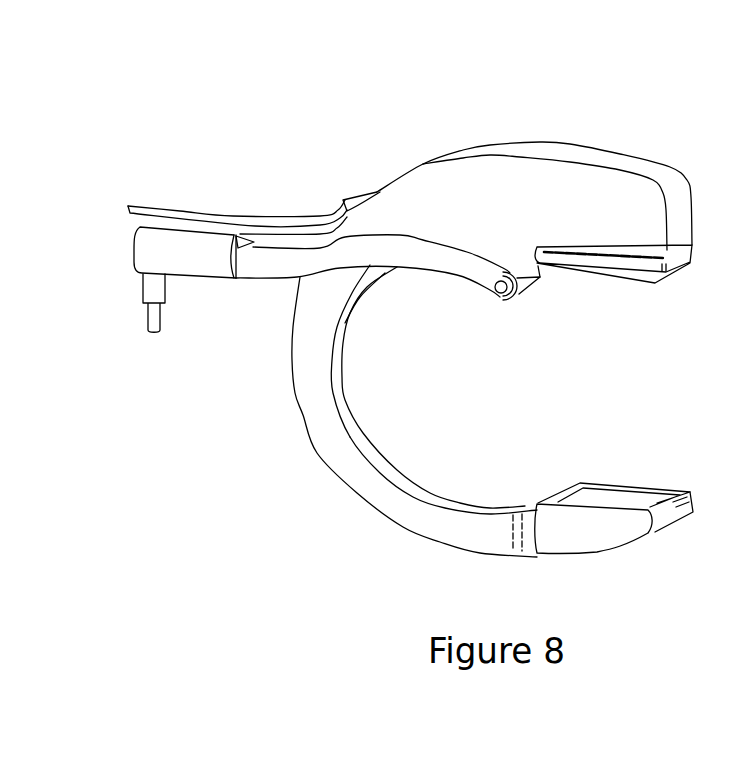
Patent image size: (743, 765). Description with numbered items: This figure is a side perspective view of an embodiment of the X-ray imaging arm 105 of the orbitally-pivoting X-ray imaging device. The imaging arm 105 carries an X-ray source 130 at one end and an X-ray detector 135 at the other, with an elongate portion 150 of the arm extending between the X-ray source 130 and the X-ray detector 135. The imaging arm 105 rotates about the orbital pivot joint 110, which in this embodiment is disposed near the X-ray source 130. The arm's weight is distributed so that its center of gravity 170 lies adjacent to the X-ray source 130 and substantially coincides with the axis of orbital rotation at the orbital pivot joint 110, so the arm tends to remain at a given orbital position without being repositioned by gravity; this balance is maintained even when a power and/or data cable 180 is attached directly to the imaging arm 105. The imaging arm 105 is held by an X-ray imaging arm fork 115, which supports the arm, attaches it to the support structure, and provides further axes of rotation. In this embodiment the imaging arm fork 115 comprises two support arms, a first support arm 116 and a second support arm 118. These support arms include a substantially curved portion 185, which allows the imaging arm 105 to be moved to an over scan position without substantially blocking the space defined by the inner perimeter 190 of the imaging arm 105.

The X-ray imaging arm 105 is at (522, 178).
The orbital pivot joint 110 is at (494, 299).
The X-ray imaging arm fork 115 is at (243, 288).
The first support arm 116 is at (287, 262).
The second support arm 118 is at (287, 243).
The X-ray source 130 is at (628, 288).
The X-ray detector 135 is at (644, 491).
The elongate portion 150 is at (309, 443).
The center of gravity 170 is at (512, 299).
The power and/or data cable 180 is at (235, 216).
The substantially curved portion 185 is at (390, 279).
The inner perimeter 190 is at (448, 491).